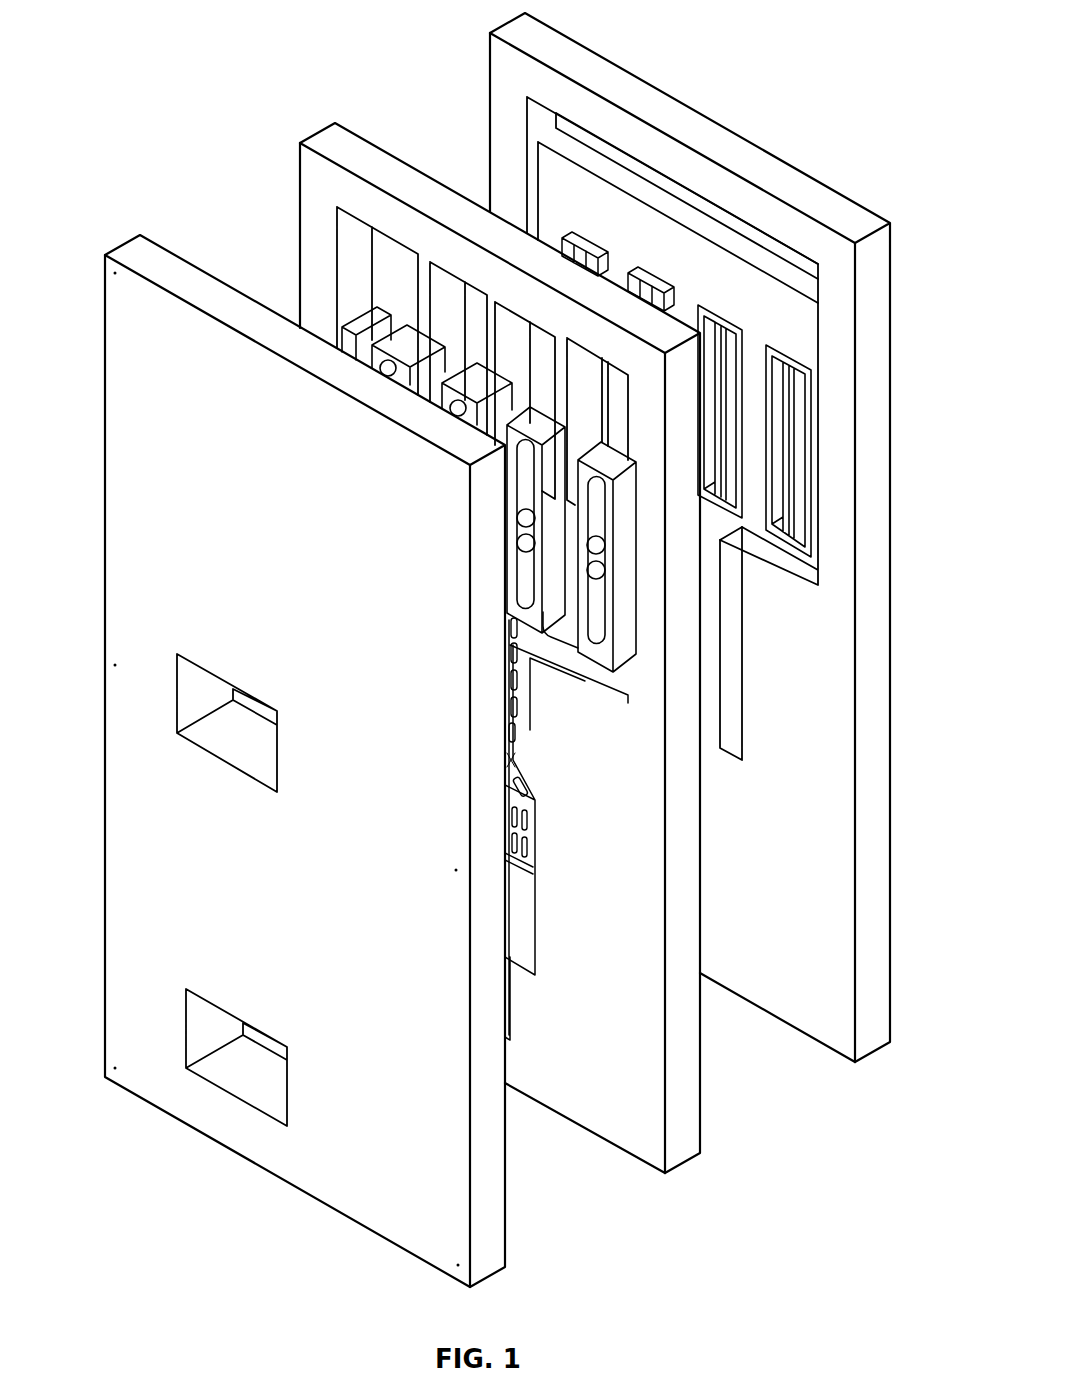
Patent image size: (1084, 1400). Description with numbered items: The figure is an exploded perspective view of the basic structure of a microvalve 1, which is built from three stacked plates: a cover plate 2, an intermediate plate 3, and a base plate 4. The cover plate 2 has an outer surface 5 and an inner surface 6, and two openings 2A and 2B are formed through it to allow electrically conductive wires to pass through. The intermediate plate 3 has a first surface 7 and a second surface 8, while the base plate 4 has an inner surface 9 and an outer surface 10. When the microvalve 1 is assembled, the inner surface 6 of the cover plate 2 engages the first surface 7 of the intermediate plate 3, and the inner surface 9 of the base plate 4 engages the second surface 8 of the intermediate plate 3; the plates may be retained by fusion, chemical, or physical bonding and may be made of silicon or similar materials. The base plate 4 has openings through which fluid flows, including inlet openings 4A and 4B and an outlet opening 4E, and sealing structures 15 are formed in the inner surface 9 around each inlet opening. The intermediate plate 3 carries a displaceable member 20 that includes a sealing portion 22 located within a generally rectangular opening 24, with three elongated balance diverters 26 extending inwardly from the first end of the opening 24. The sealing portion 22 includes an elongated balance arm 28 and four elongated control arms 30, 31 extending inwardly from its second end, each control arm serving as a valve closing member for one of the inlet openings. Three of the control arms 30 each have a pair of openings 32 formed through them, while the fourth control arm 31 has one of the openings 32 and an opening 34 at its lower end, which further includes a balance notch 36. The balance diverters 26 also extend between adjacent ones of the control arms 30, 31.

The microvalve 1 is at (228, 54).
The cover plate 2 is at (130, 250).
The opening 2A is at (188, 688).
The opening 2B is at (198, 1023).
The intermediate plate 3 is at (320, 135).
The base plate 4 is at (510, 22).
The inlet opening 4A is at (790, 490).
The inlet opening 4B is at (720, 453).
The outlet opening 4E is at (597, 143).
The outer surface 5 is at (112, 300).
The inner surface 6 is at (178, 258).
The first surface 7 is at (312, 188).
The second surface 8 is at (355, 138).
The inner surface 9 is at (500, 78).
The outer surface 10 is at (558, 30).
The sealing structures 15 is at (718, 322).
The displaceable member 20 is at (524, 728).
The sealing portion 22 is at (622, 540).
The opening 24 is at (382, 236).
The balance diverters 26 is at (425, 272).
The balance arm 28 is at (345, 343).
The control arms 30 is at (385, 352).
The control arm 31 is at (578, 645).
The openings 32 is at (392, 374).
The opening 34 is at (588, 598).
The balance notch 36 is at (588, 655).